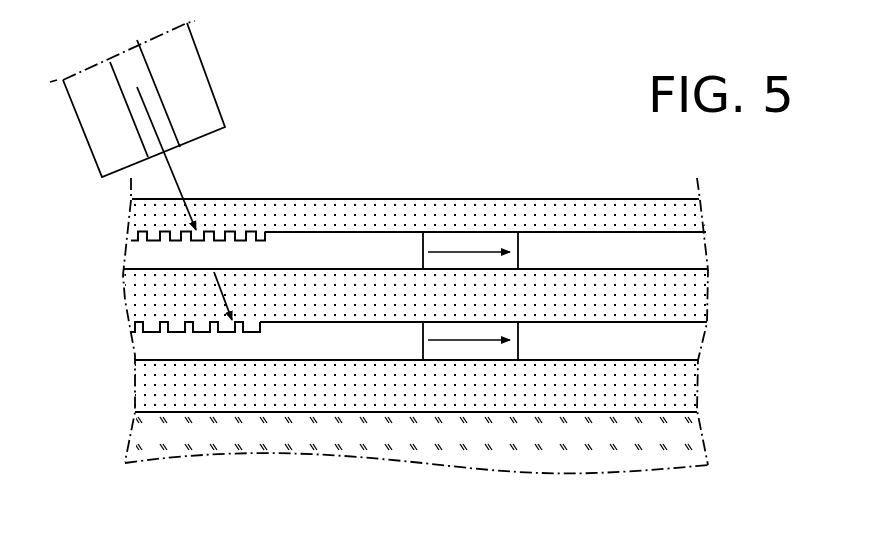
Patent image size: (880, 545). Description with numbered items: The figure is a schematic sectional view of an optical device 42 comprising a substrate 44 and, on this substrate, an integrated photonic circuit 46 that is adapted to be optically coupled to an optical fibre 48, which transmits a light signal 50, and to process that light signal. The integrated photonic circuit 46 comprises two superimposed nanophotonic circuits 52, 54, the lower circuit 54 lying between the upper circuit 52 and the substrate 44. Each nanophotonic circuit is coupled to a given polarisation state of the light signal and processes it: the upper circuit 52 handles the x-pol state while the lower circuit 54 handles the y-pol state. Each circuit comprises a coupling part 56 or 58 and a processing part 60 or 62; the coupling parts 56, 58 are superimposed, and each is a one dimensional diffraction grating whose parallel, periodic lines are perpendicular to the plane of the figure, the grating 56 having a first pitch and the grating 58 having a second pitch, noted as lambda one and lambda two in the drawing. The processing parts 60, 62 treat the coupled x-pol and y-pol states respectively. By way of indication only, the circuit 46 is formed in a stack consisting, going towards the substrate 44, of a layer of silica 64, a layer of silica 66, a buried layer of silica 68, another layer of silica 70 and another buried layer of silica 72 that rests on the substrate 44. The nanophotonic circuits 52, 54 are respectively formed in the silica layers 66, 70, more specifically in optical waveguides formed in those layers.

The optical device 42 is at (422, 291).
The substrate 44 is at (130, 440).
The integrated photonic circuit 46 is at (122, 288).
The optical fibre 48 is at (208, 80).
The light signal 50 is at (157, 128).
The nanophotonic circuit 52 is at (493, 224).
The nanophotonic circuit 54 is at (491, 312).
The coupling part 56 is at (229, 221).
The coupling part 58 is at (254, 312).
The processing part 60 is at (601, 224).
The processing part 62 is at (624, 312).
The layer of silica 64 is at (706, 210).
The layer of silica 66 is at (712, 250).
The buried layer of silica 68 is at (712, 290).
The layer of silica 70 is at (702, 340).
The buried layer of silica 72 is at (700, 386).